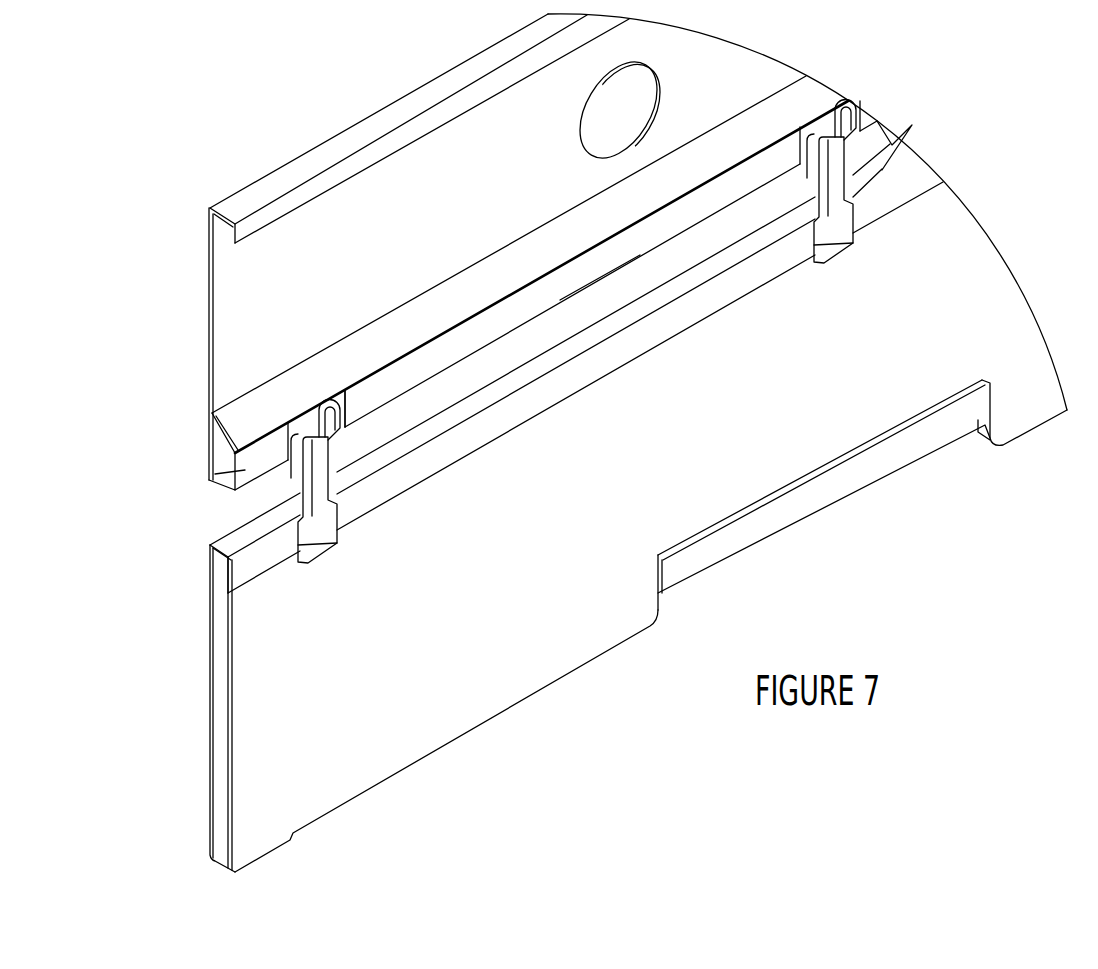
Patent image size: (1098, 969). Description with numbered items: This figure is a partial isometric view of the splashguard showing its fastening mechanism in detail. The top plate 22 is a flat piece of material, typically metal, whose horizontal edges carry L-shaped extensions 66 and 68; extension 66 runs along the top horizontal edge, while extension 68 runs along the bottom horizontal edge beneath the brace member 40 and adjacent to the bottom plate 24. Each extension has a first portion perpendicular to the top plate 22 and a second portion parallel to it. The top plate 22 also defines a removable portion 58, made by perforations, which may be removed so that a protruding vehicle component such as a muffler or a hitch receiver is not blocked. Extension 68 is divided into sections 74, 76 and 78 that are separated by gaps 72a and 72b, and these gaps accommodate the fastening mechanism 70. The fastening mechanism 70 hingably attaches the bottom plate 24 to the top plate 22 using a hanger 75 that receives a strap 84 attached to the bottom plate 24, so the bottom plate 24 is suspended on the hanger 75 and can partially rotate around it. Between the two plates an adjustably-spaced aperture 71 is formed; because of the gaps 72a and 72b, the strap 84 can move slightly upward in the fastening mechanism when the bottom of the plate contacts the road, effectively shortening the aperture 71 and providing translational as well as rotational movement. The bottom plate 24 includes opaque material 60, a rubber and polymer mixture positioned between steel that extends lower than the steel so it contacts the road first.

The top plate 22 is at (228, 318).
The bottom plate 24 is at (208, 690).
The brace member 40 is at (242, 422).
The removable portion 58 is at (585, 108).
The opaque material 60 is at (450, 667).
The L-shaped extension 66 is at (198, 222).
The L-shaped extension 68 is at (200, 505).
The fastening mechanism 70 is at (760, 200).
The adjustably-spaced aperture 71 is at (602, 301).
The gap 72a is at (307, 425).
The gap 72b is at (822, 122).
The section 74 is at (245, 470).
The hanger 75 is at (337, 437).
The section 76 is at (557, 293).
The section 78 is at (880, 167).
The strap 84 is at (838, 250).